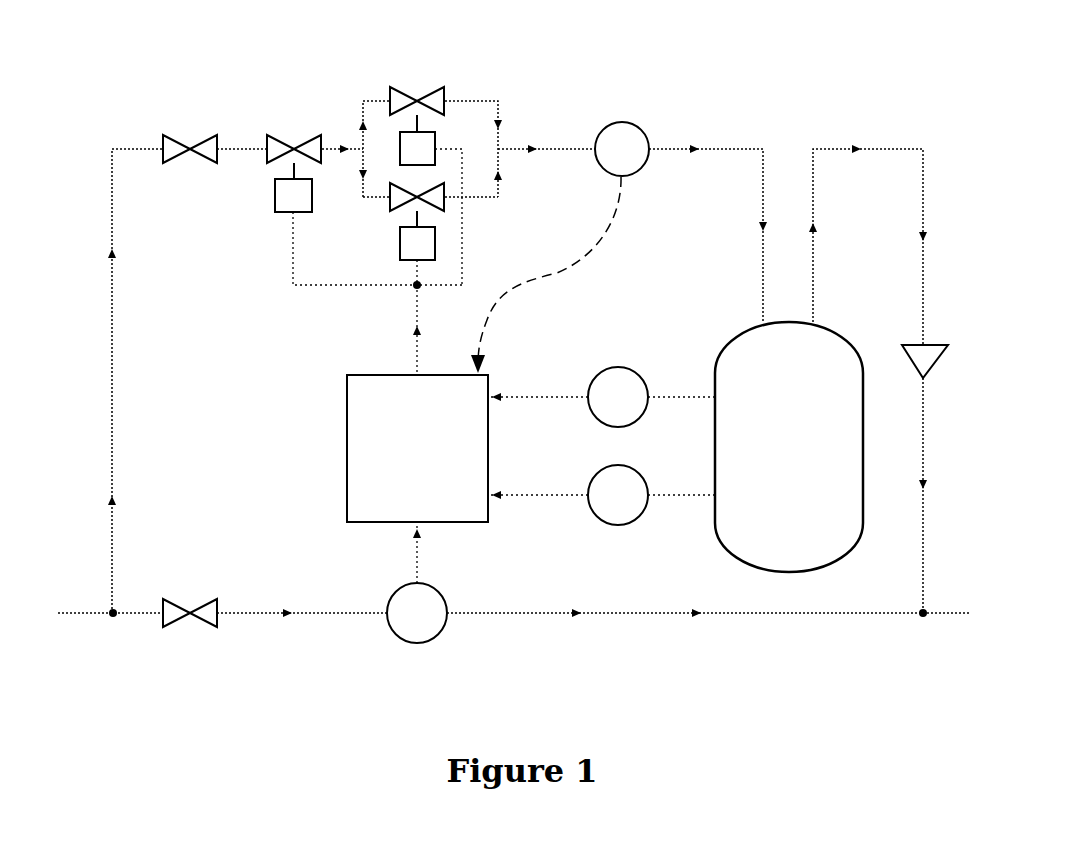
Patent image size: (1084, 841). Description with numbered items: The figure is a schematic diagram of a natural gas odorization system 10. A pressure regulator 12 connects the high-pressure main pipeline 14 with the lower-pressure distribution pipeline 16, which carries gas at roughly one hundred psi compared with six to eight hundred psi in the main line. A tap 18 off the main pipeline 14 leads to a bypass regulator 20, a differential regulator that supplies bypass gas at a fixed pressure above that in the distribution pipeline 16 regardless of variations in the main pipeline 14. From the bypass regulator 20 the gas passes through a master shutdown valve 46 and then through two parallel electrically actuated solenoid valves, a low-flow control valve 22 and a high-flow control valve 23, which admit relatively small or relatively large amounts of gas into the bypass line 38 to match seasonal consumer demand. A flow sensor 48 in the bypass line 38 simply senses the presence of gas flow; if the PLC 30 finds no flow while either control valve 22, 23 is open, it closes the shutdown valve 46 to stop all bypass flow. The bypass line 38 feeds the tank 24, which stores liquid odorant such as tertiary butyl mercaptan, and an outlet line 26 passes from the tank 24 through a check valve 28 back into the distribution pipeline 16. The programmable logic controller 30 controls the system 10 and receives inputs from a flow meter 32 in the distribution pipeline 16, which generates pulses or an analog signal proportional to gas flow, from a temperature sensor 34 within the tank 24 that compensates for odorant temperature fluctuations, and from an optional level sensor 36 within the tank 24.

The gas odorization system 10 is at (116, 99).
The pressure regulator 12 is at (184, 620).
The main pipeline 14 is at (75, 614).
The distribution pipeline 16 is at (937, 615).
The tap 18 is at (113, 318).
The bypass regulator 20 is at (192, 147).
The low-flow control valve 22 is at (420, 99).
The high-flow control valve 23 is at (446, 201).
The tank 24 is at (789, 447).
The outlet line 26 is at (838, 147).
The check valve 28 is at (902, 344).
The programmable logic controller 30 is at (417, 448).
The flow meter 32 is at (417, 643).
The temperature sensor 34 is at (621, 525).
The level sensor 36 is at (604, 366).
The bypass line 38 is at (679, 147).
The master shutdown valve 46 is at (283, 147).
The flow sensor 48 is at (605, 124).